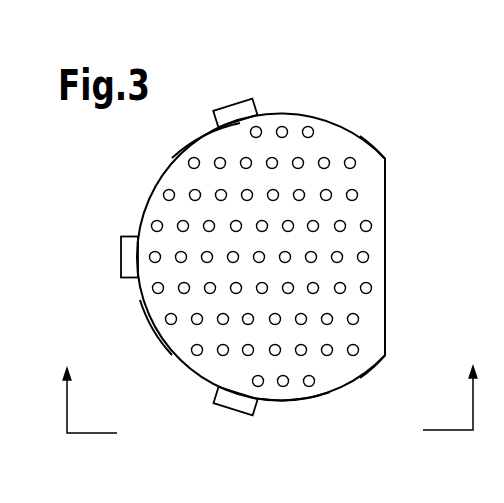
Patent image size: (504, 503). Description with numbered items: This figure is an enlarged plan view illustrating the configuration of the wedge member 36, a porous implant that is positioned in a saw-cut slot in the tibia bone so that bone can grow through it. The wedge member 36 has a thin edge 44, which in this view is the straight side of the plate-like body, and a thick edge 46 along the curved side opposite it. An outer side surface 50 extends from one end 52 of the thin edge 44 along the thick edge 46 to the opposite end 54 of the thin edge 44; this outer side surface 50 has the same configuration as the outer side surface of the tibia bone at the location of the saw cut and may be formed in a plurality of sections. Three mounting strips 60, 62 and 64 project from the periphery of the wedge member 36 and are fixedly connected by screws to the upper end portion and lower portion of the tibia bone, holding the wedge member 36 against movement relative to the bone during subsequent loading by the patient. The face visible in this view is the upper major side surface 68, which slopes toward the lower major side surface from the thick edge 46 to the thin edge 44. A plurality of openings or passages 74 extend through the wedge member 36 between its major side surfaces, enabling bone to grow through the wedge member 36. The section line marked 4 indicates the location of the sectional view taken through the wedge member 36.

The wedge member 36 is at (306, 108).
The thin edge 44 is at (387, 210).
The thick edge 46 is at (155, 330).
The outer side surface 50 is at (172, 158).
The end of the thin edge 52 is at (385, 159).
The opposite end of the thin edge 54 is at (385, 353).
The mounting strip 60 is at (232, 113).
The mounting strip 62 is at (132, 258).
The mounting strip 64 is at (232, 405).
The upper major side surface 68 is at (295, 389).
The openings or passages 74 is at (313, 226).
The section line 4- 4 is at (270, 386).